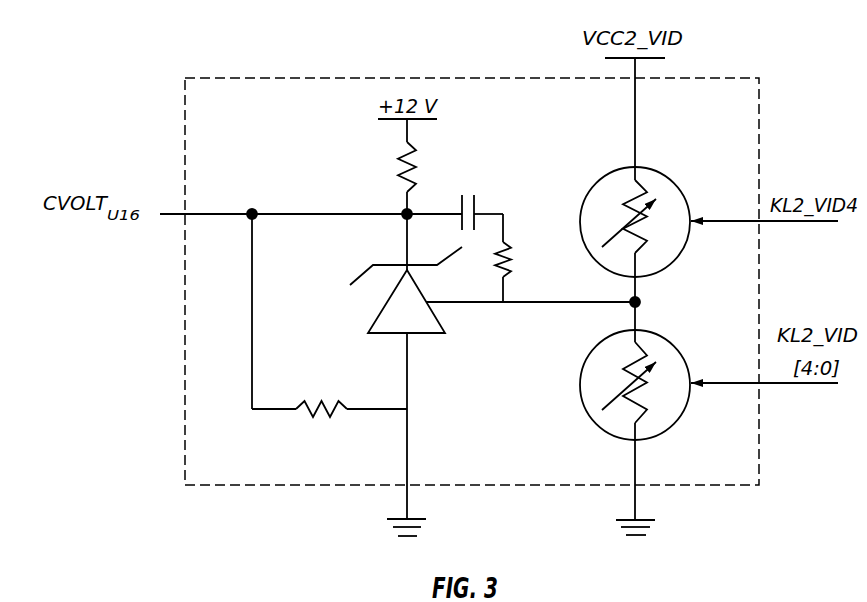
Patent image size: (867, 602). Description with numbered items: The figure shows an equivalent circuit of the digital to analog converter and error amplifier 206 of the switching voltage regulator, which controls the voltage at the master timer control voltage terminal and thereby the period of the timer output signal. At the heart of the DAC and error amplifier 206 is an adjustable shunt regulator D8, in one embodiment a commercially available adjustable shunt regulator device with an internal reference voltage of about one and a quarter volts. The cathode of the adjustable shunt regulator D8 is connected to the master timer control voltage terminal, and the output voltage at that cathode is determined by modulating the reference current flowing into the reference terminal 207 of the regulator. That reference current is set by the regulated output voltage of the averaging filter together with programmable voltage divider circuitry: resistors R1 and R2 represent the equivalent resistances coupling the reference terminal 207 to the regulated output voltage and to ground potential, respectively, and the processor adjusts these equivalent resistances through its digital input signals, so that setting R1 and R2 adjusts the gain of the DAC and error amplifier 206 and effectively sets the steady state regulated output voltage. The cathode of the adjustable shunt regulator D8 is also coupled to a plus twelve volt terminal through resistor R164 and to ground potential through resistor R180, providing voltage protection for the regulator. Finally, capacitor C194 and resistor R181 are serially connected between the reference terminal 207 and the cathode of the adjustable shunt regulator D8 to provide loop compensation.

The DAC and error amplifier 206 is at (759, 110).
The reference terminal 207 is at (642, 298).
The resistor R164 is at (376, 161).
The capacitor C194 is at (470, 188).
The resistor R181 is at (518, 272).
The adjustable shunt regulator D8 is at (380, 337).
The resistor R180 is at (314, 426).
The resistor R1 is at (660, 172).
The resistor R2 is at (660, 335).